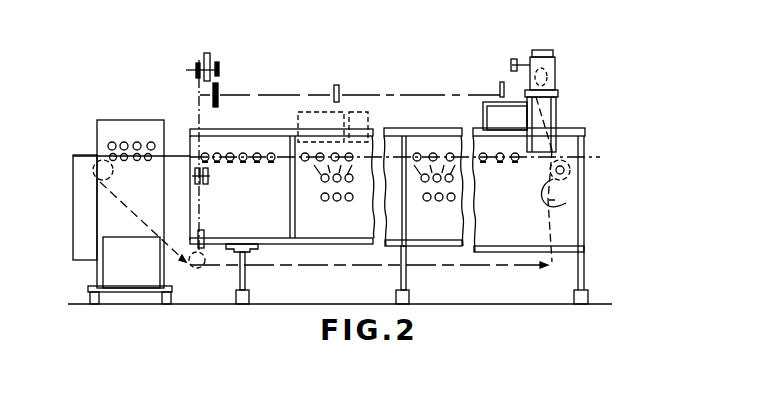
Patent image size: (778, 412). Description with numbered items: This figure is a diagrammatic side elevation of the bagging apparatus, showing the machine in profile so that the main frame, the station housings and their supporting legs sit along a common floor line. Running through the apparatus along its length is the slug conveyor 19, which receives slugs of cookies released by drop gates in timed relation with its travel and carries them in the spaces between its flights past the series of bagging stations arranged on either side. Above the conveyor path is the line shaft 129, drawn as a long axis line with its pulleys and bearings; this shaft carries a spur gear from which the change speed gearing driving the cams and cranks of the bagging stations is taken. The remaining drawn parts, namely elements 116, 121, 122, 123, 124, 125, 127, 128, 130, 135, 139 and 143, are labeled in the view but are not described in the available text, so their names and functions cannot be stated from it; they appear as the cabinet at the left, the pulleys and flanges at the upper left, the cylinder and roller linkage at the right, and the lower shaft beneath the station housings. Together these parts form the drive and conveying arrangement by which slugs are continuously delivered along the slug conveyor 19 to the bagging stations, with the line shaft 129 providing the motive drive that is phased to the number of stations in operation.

The slug conveyor 19 is at (178, 153).
The first processing tank 116 is at (226, 166).
The control cabinet 121 is at (100, 182).
The guide roller 122 is at (551, 174).
The roller link arm 123 is at (567, 206).
The lower drive shaft 124 is at (546, 267).
The lower pulley 125 is at (198, 268).
The cylinder head 127 is at (556, 70).
The pneumatic cylinder 128 is at (560, 106).
The line shaft 129 is at (409, 93).
The piston rod 130 is at (560, 155).
The drive pulley 135 is at (212, 68).
The pulley flange 139 is at (196, 72).
The shaft pulley 143 is at (218, 89).